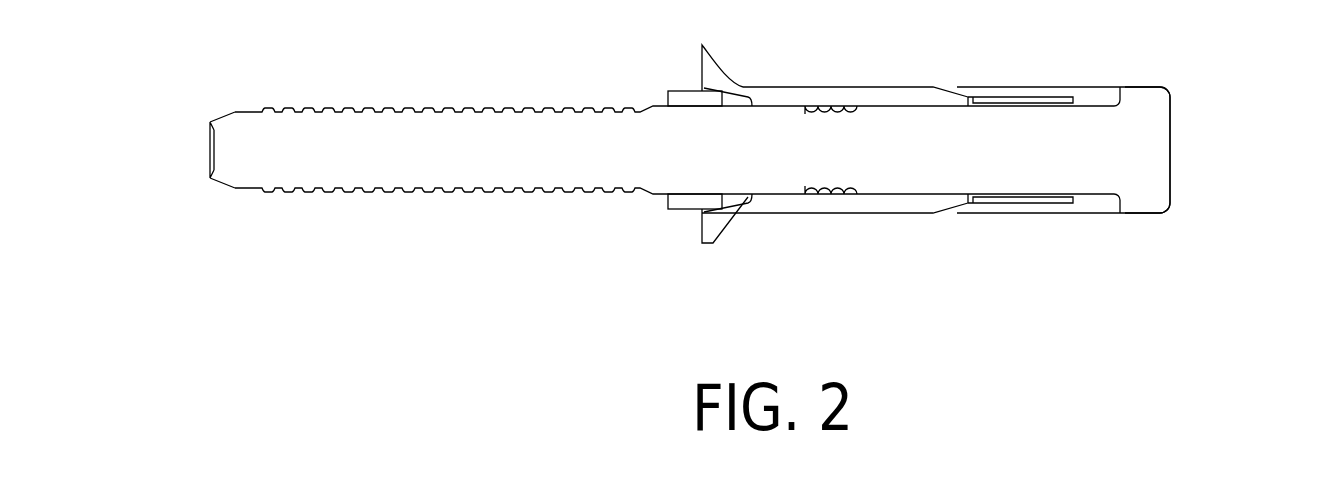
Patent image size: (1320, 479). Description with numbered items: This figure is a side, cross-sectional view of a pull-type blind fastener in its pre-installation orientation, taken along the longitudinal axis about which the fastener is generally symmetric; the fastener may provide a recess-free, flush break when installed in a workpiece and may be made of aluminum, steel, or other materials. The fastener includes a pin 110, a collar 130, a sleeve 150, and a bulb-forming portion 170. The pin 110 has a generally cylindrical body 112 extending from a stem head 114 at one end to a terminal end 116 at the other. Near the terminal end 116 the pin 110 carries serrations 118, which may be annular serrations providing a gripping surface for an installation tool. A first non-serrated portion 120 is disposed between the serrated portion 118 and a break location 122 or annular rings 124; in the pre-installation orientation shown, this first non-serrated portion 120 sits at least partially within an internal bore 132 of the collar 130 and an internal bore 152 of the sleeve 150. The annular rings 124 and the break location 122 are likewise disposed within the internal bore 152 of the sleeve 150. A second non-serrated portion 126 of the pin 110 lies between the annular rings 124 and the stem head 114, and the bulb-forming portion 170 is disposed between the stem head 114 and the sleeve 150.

The pin 110 is at (393, 169).
The generally cylindrical body 112 is at (427, 132).
The stem head 114 is at (1157, 202).
The terminal end 116 is at (210, 167).
The serrations 118 is at (392, 178).
The first non-serrated portion 120 is at (740, 188).
The break location 122 is at (810, 193).
The annular rings 124 is at (848, 185).
The second non-serrated portion 126 is at (1032, 187).
The collar 130 is at (696, 100).
The internal bore of the collar 132 is at (680, 195).
The sleeve 150 is at (894, 118).
The internal bore of the sleeve 152 is at (882, 107).
The bulb-forming portion 170 is at (1102, 158).